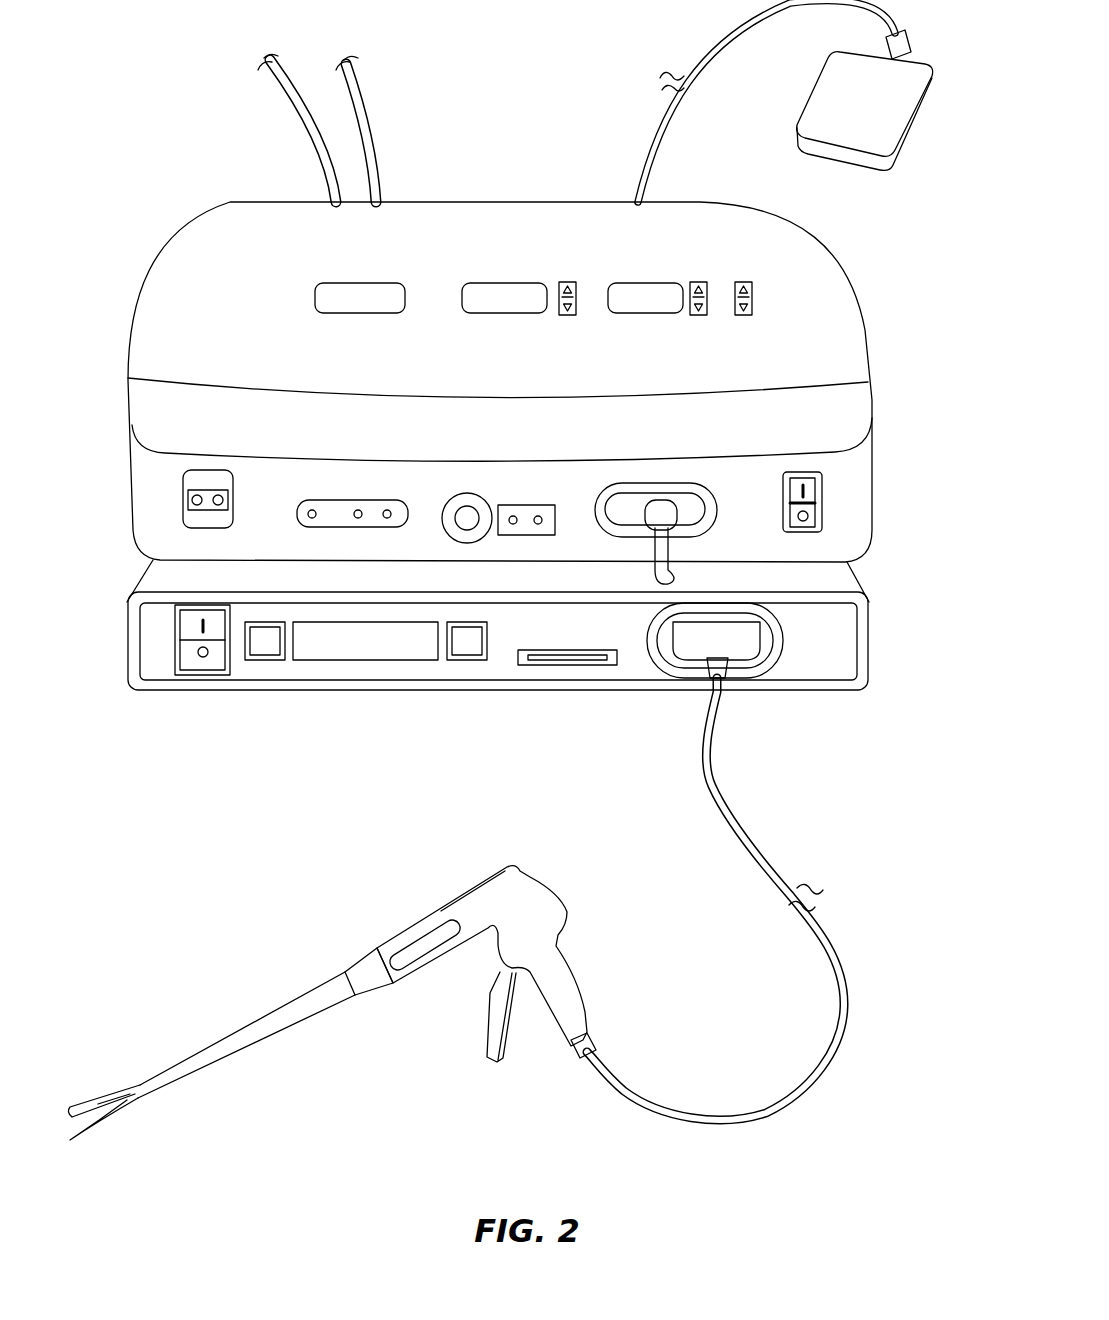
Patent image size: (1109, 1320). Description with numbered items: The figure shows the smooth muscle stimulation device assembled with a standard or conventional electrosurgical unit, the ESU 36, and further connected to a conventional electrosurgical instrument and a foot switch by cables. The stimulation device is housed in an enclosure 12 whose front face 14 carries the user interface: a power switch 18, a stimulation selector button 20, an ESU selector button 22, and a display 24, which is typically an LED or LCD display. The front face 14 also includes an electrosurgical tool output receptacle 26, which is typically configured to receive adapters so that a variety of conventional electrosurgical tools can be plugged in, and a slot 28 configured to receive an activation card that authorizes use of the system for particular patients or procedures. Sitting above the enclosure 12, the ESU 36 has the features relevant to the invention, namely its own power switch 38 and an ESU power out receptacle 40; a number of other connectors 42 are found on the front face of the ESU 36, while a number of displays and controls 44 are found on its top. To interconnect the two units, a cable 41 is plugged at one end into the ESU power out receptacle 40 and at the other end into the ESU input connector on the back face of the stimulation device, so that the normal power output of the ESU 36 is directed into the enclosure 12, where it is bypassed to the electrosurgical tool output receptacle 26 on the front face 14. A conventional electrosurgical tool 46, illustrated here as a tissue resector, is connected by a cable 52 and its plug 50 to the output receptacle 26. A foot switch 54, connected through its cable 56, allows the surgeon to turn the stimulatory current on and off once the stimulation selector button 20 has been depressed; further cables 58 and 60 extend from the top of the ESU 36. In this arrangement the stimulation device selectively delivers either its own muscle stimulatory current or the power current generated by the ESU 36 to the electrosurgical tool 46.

The enclosure 12 is at (510, 499).
The front face 14 is at (513, 668).
The power switch 18 is at (190, 658).
The stimulation selector button 20 is at (267, 645).
The ESU selector button 22 is at (463, 645).
The display 24 is at (362, 645).
The electrosurgical tool output receptacle 26 is at (765, 652).
The slot 28 is at (600, 660).
The ESU 36 is at (823, 345).
The power switch 38 is at (822, 488).
The ESU power out receptacle 40 is at (715, 520).
The cable 41 is at (672, 566).
The connectors 42 is at (207, 448).
The displays and controls 44 is at (317, 272).
The electrosurgical tool 46 is at (446, 930).
The handpiece plug 50 is at (742, 658).
The cable 52 is at (850, 953).
The foot switch 54 is at (872, 133).
The footswitch cable 56 is at (660, 127).
The cable 58 is at (364, 120).
The cable 60 is at (310, 121).